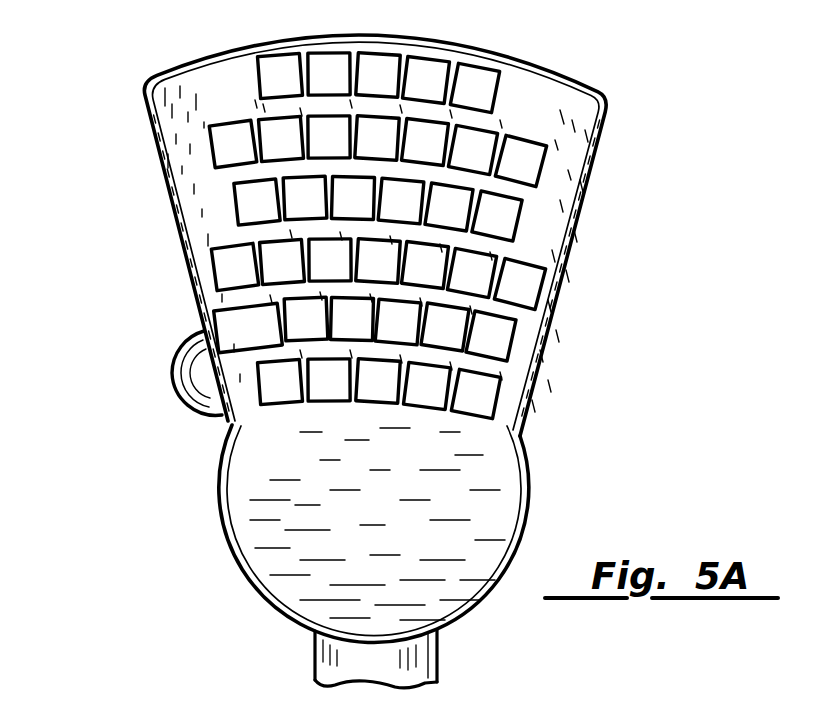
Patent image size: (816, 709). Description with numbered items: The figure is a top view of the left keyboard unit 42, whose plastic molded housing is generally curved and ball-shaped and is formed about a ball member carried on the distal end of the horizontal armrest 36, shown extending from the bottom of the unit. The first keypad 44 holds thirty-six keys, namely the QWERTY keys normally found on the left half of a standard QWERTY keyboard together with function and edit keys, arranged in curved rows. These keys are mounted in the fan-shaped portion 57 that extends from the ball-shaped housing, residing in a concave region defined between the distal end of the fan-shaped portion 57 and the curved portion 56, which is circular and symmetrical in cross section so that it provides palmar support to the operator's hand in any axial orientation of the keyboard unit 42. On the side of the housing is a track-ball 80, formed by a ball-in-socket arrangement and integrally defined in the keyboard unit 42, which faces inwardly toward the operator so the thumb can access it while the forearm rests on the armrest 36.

The keyboard unit 42 is at (632, 96).
The first keypad 44 is at (556, 197).
The fan-shaped portion 57 is at (548, 66).
The curved portion 56 is at (390, 513).
The armrest 36 is at (316, 647).
The track-ball 80 is at (176, 352).